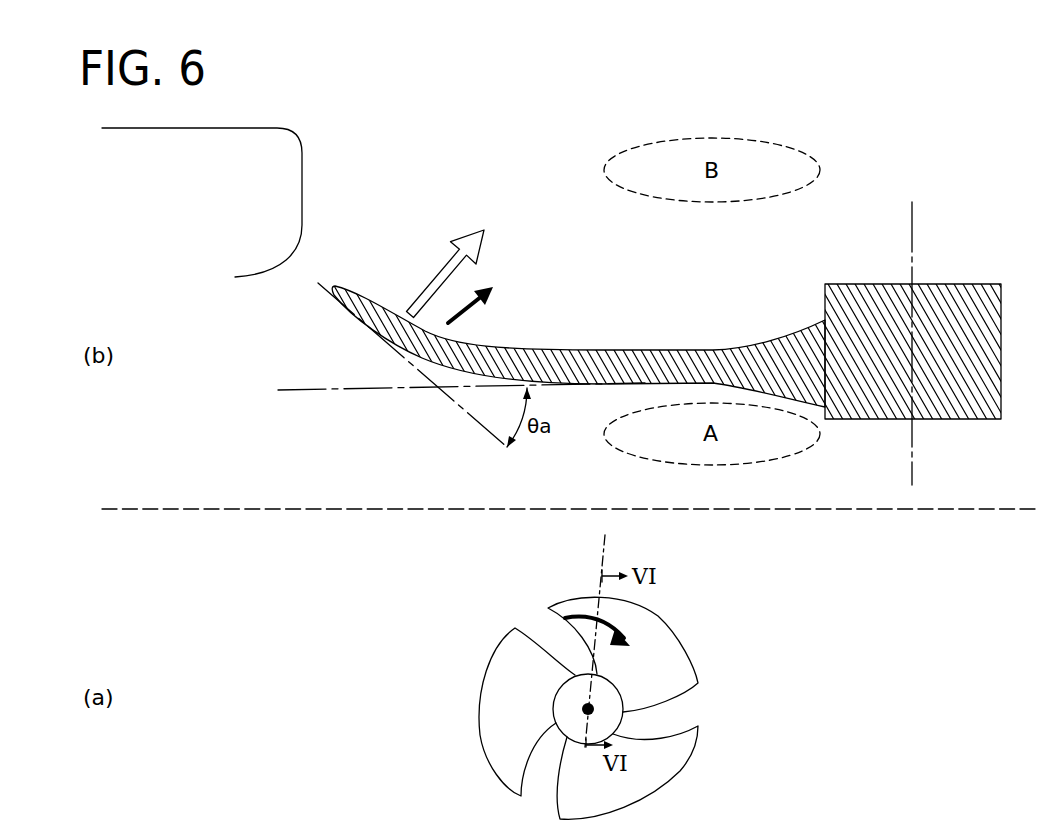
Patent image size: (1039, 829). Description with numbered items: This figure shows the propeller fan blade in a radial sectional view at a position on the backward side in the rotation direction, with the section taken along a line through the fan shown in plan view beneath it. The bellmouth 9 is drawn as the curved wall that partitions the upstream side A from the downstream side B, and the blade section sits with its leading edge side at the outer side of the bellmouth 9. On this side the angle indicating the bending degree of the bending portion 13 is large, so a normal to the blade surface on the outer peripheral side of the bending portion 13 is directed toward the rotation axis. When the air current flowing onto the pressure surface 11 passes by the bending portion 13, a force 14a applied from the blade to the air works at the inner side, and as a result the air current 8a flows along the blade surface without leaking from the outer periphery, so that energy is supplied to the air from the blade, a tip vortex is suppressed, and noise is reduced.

The bellmouth 9 is at (302, 173).
The pressure surface 11 is at (633, 350).
The bending portion 13 is at (470, 357).
The force 14a is at (430, 280).
The air current 8a is at (467, 313).